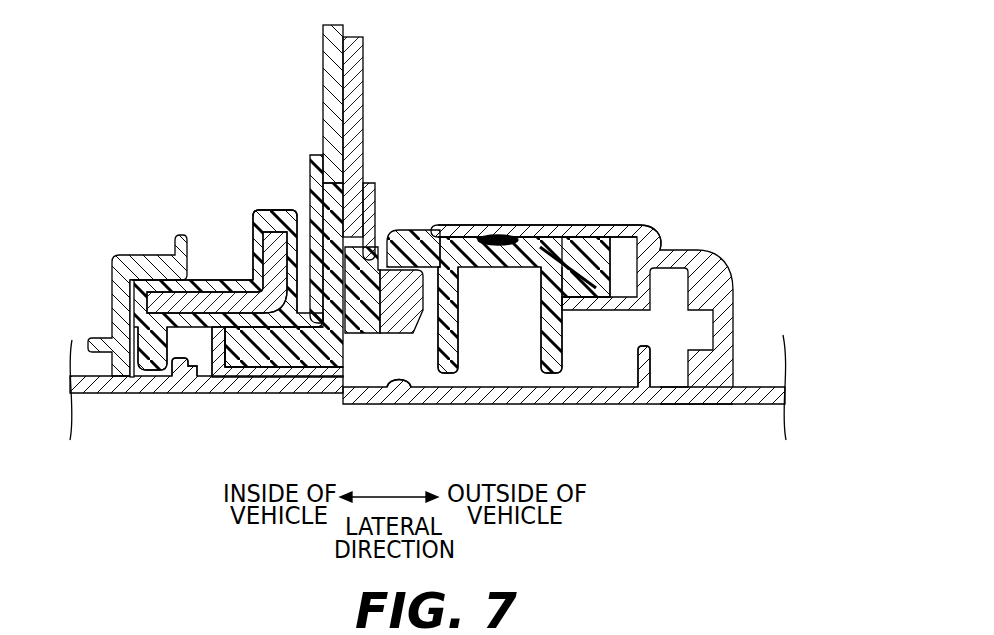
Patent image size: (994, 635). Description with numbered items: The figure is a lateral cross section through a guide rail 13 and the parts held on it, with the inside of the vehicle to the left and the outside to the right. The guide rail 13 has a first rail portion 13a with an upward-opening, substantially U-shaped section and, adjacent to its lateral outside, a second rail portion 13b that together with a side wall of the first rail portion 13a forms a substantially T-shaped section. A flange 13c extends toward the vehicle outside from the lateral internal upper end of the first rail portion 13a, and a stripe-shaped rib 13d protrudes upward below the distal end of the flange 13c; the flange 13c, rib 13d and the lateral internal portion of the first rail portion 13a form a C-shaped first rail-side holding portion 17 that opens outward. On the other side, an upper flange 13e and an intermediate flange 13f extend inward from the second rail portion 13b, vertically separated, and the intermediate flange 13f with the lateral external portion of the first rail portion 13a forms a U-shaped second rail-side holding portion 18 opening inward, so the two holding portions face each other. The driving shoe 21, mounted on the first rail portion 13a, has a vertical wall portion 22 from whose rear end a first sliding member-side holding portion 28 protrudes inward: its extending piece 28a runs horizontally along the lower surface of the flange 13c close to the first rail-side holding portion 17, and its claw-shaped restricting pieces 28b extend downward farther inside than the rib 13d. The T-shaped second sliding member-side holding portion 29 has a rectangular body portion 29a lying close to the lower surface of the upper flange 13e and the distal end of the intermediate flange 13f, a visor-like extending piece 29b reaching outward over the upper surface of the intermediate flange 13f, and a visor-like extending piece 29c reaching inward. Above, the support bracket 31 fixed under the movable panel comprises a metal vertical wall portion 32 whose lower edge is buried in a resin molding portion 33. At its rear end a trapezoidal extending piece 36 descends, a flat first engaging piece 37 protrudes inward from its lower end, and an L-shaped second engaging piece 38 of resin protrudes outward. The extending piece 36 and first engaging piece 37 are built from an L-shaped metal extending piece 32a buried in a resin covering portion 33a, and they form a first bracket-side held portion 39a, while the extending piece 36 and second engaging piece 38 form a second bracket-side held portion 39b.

The guide rail 13 is at (720, 412).
The first rail portion 13a is at (394, 384).
The second rail portion 13b is at (677, 390).
The flange 13c is at (145, 255).
The rib 13d is at (180, 377).
The upper flange 13e is at (562, 226).
The intermediate flange 13f is at (661, 248).
The first rail-side holding portion 17 is at (131, 303).
The second rail-side holding portion 18 is at (637, 360).
The driving shoe 21 is at (273, 208).
The vertical wall portion 22 is at (281, 208).
The first sliding member-side holding portion 28 is at (276, 372).
The extending piece 28a is at (228, 279).
The restricting pieces 28b is at (143, 372).
The second sliding member-side holding portion 29 is at (503, 237).
The body portion 29a is at (563, 343).
The extending piece 29b is at (597, 280).
The extending piece 29c is at (416, 237).
The support bracket 31 is at (323, 75).
The vertical wall portion 32 is at (357, 82).
The extending piece 32a is at (338, 392).
The molding portion 33 is at (366, 197).
The covering portion 33a is at (213, 377).
The extending piece 36 is at (262, 245).
The first engaging piece 37 is at (238, 377).
The second engaging piece 38 is at (418, 324).
The first bracket-side held portion 39a is at (304, 372).
The second bracket-side held portion 39b is at (370, 334).